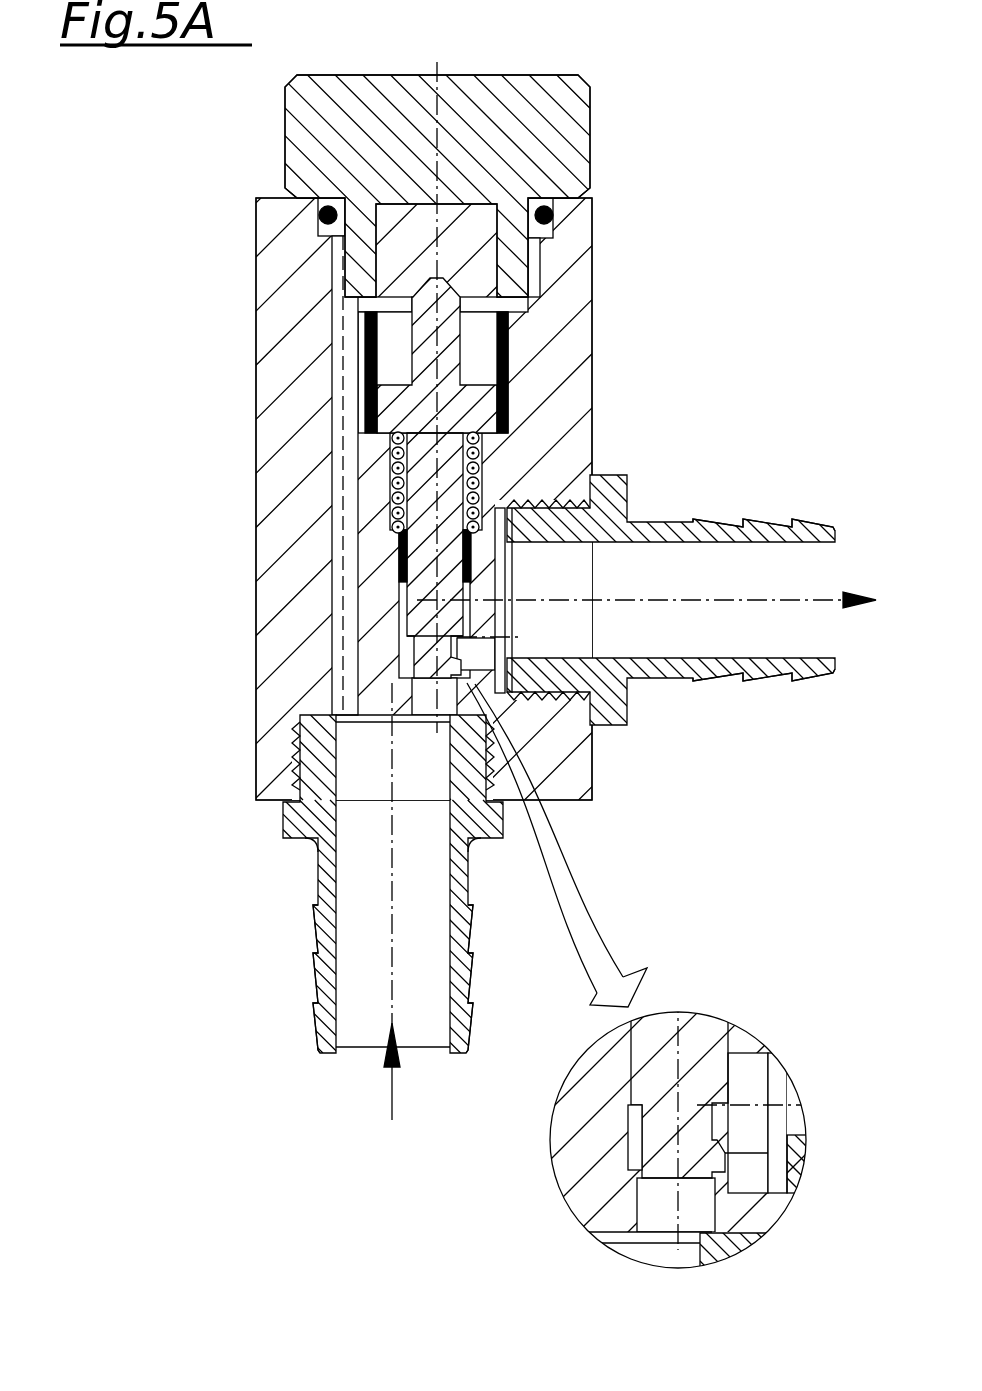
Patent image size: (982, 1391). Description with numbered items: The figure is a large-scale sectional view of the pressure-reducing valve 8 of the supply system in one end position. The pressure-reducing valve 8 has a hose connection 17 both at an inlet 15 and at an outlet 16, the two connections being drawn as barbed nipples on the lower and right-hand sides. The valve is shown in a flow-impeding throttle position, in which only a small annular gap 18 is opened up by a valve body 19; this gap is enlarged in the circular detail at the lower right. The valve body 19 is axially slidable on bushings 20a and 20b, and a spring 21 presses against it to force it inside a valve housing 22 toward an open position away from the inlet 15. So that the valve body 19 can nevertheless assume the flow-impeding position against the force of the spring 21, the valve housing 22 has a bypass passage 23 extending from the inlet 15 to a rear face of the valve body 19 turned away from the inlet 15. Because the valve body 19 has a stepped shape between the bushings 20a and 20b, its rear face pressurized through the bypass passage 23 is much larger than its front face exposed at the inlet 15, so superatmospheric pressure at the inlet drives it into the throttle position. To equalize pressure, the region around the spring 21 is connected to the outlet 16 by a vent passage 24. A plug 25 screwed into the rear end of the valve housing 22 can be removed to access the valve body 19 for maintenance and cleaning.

The pressure-reducing valve 8 is at (655, 52).
The inlet 15 is at (270, 826).
The outlet 16 is at (624, 452).
The hose connection 17 is at (765, 668).
The annular gap 18 is at (408, 670).
The valve body 19 is at (422, 622).
The bushing 20a is at (400, 553).
The bushing 20b is at (367, 343).
The spring 21 is at (473, 472).
The valve housing 22 is at (580, 277).
The bypass passage 23 is at (340, 397).
The vent passage 24 is at (490, 510).
The plug 25 is at (468, 88).